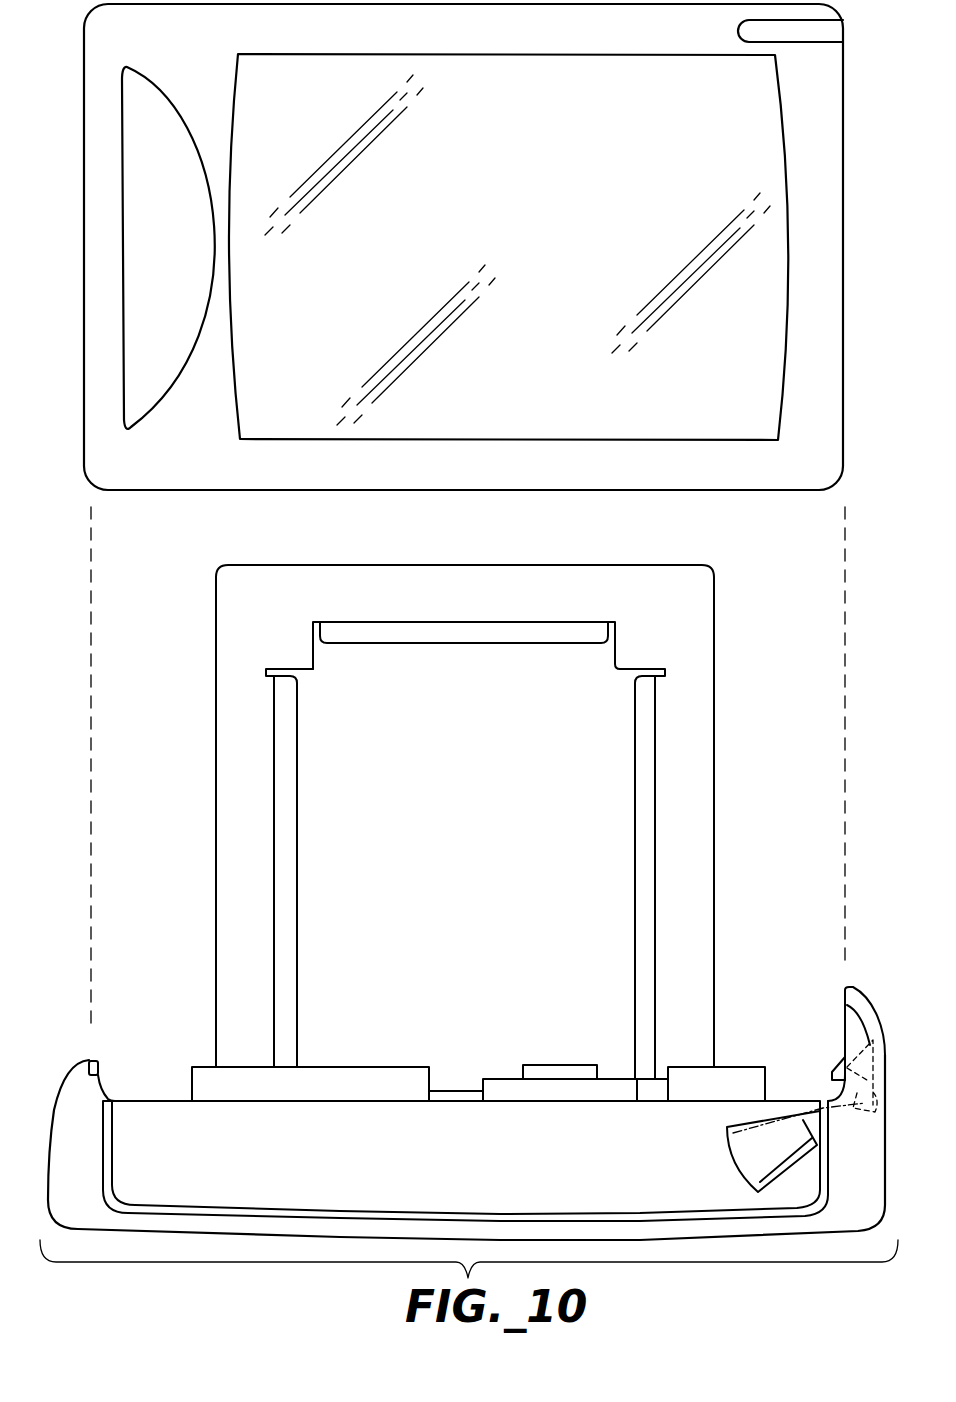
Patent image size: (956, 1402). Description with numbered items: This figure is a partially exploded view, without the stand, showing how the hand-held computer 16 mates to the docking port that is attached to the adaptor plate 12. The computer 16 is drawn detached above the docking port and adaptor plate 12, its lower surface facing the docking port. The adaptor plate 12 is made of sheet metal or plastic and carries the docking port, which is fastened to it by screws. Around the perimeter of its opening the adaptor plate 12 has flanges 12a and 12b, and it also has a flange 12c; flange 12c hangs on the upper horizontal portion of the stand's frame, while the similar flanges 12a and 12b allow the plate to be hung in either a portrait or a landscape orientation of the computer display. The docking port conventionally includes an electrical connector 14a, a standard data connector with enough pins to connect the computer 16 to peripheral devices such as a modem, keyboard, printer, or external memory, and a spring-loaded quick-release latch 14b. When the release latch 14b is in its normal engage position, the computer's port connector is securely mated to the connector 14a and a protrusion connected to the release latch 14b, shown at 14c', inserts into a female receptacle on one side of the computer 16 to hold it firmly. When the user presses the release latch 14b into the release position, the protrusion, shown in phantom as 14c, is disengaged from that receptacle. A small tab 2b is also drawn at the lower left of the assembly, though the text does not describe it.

The hand-held computer 16 is at (740, 486).
The adaptor plate 12 is at (490, 822).
The flange 12a is at (641, 803).
The flange 12b is at (292, 779).
The flange 12c is at (455, 641).
The housing tab 2b is at (96, 1063).
The electrical connector 14a is at (559, 1067).
The spring-loaded quick-release latch 14b is at (753, 1158).
The protrusion on the release latch (release position) 14c is at (836, 1030).
The protrusion connected to the release latch (engage position) 14c' is at (817, 1071).